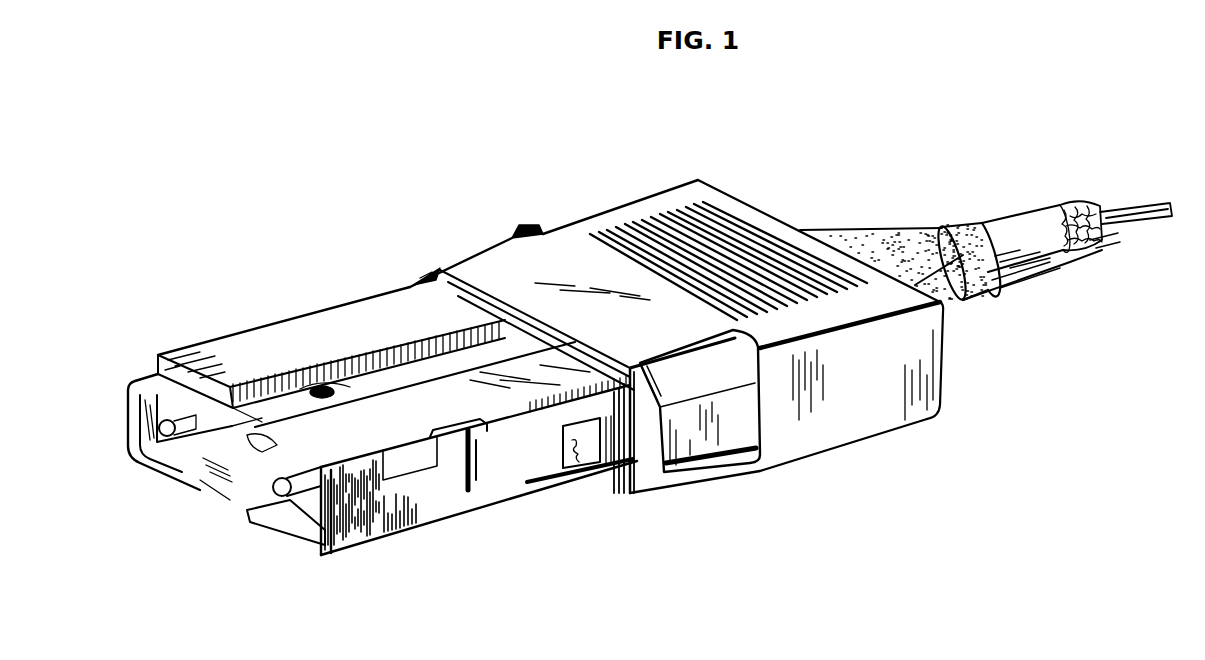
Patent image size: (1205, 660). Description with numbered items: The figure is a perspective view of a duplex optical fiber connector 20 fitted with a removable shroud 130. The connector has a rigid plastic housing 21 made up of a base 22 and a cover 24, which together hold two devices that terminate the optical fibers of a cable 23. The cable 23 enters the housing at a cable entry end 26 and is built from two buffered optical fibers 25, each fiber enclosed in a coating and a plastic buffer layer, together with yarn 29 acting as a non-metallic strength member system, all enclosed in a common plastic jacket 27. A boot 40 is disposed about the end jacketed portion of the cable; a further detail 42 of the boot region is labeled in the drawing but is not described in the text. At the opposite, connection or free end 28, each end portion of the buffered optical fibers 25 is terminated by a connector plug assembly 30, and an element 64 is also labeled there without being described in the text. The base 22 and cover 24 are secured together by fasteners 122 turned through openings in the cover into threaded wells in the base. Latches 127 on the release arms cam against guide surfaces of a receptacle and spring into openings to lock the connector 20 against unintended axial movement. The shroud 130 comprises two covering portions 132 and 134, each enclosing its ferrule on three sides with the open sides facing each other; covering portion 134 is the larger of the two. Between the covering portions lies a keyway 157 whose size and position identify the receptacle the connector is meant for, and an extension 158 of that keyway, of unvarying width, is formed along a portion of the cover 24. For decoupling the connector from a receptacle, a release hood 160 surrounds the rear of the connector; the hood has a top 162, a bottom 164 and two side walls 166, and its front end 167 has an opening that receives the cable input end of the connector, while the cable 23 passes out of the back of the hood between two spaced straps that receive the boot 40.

The duplex optical fiber connector 20 is at (557, 192).
The housing 21 is at (510, 490).
The base 22 is at (427, 512).
The cable 23 is at (1067, 255).
The cover 24 is at (317, 323).
The buffered optical fibers 25 is at (1150, 205).
The cable entry end 26 is at (938, 395).
The plastic jacket 27 is at (1012, 228).
The free end 28 is at (127, 370).
The yarn 29 is at (1078, 210).
The connector plug assembly 30 is at (138, 423).
The boot 40 is at (843, 234).
The boot body 42 is at (892, 244).
The ferrule 64 is at (212, 458).
The fasteners 122 is at (320, 383).
The latches 127 is at (573, 470).
The shroud 130 is at (353, 547).
The covering portion 132 is at (142, 463).
The covering portion 134 is at (290, 543).
The keyway 157 is at (278, 413).
The keyway extension 158 is at (420, 363).
The release hood 160 is at (672, 195).
The top 162 is at (500, 254).
The bottom 164 is at (690, 480).
The side walls 166 is at (842, 425).
The front end 167 is at (625, 493).